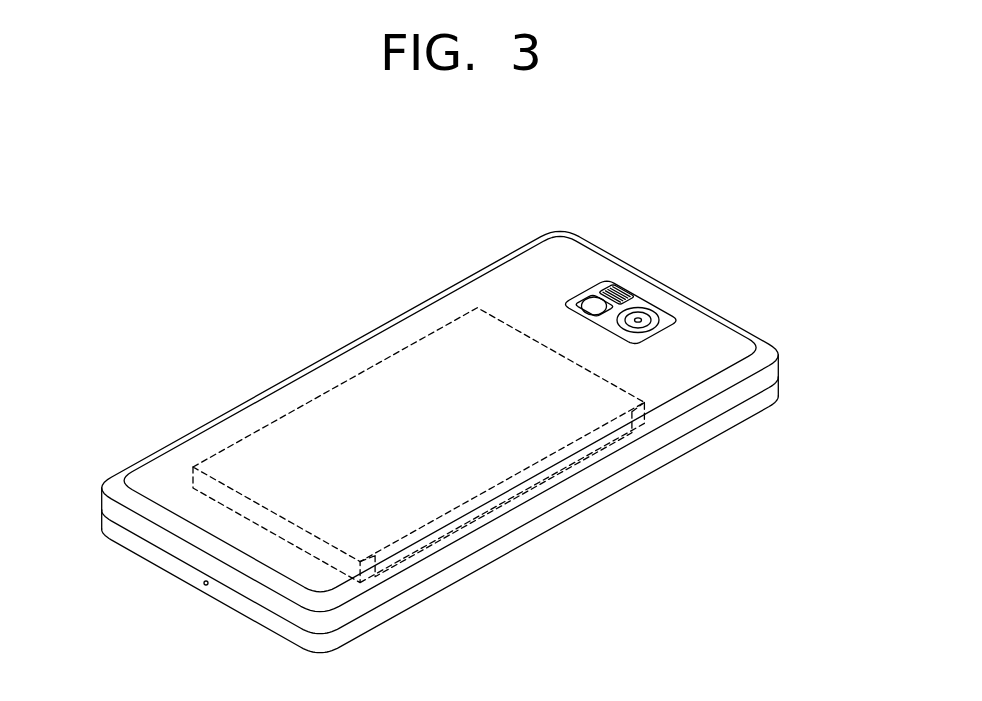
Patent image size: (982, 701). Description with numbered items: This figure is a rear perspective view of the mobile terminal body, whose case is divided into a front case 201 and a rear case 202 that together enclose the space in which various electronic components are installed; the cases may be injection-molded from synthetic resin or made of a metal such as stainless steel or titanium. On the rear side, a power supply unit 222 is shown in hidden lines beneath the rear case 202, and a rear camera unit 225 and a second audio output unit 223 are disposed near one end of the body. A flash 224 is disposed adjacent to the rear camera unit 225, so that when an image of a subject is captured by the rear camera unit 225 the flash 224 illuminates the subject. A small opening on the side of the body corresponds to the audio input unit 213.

The front case 201 is at (762, 400).
The rear case 202 is at (762, 378).
The microphone hole 213 is at (204, 586).
The battery 222 is at (337, 387).
The speaker grille 223 is at (620, 285).
The flash 224 is at (592, 298).
The camera 225 is at (641, 310).